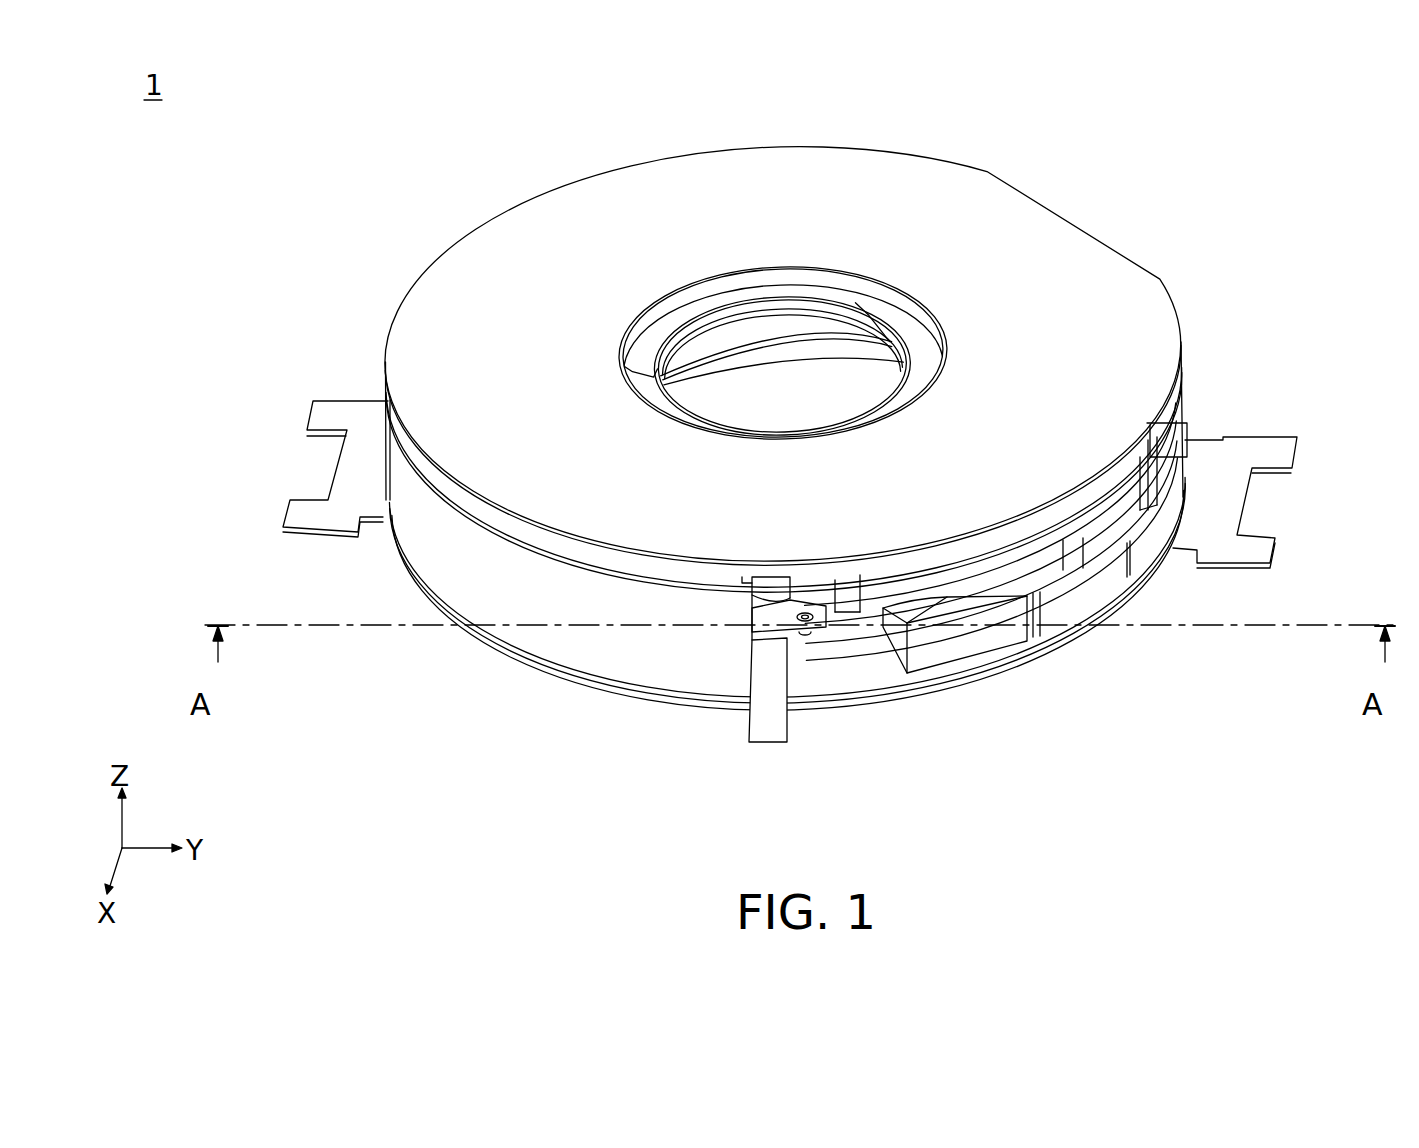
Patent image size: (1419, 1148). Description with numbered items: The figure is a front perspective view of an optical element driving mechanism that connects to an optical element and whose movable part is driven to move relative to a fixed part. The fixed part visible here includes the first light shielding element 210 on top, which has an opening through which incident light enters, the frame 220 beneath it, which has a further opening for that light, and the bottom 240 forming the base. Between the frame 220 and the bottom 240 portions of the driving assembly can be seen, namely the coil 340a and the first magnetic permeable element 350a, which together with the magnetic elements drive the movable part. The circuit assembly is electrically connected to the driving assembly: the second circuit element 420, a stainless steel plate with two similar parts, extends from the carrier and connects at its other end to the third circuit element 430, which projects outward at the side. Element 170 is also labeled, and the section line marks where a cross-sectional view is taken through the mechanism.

The first light shielding element 210 is at (627, 202).
The frame 220 is at (430, 476).
The bottom 240 is at (425, 558).
The third circuit element 430 is at (300, 514).
The right connecting bracket / terminal 170 is at (1120, 498).
The second circuit element 420 is at (771, 617).
The coil 340a is at (1037, 575).
The first magnetic permeable element 350a is at (977, 643).